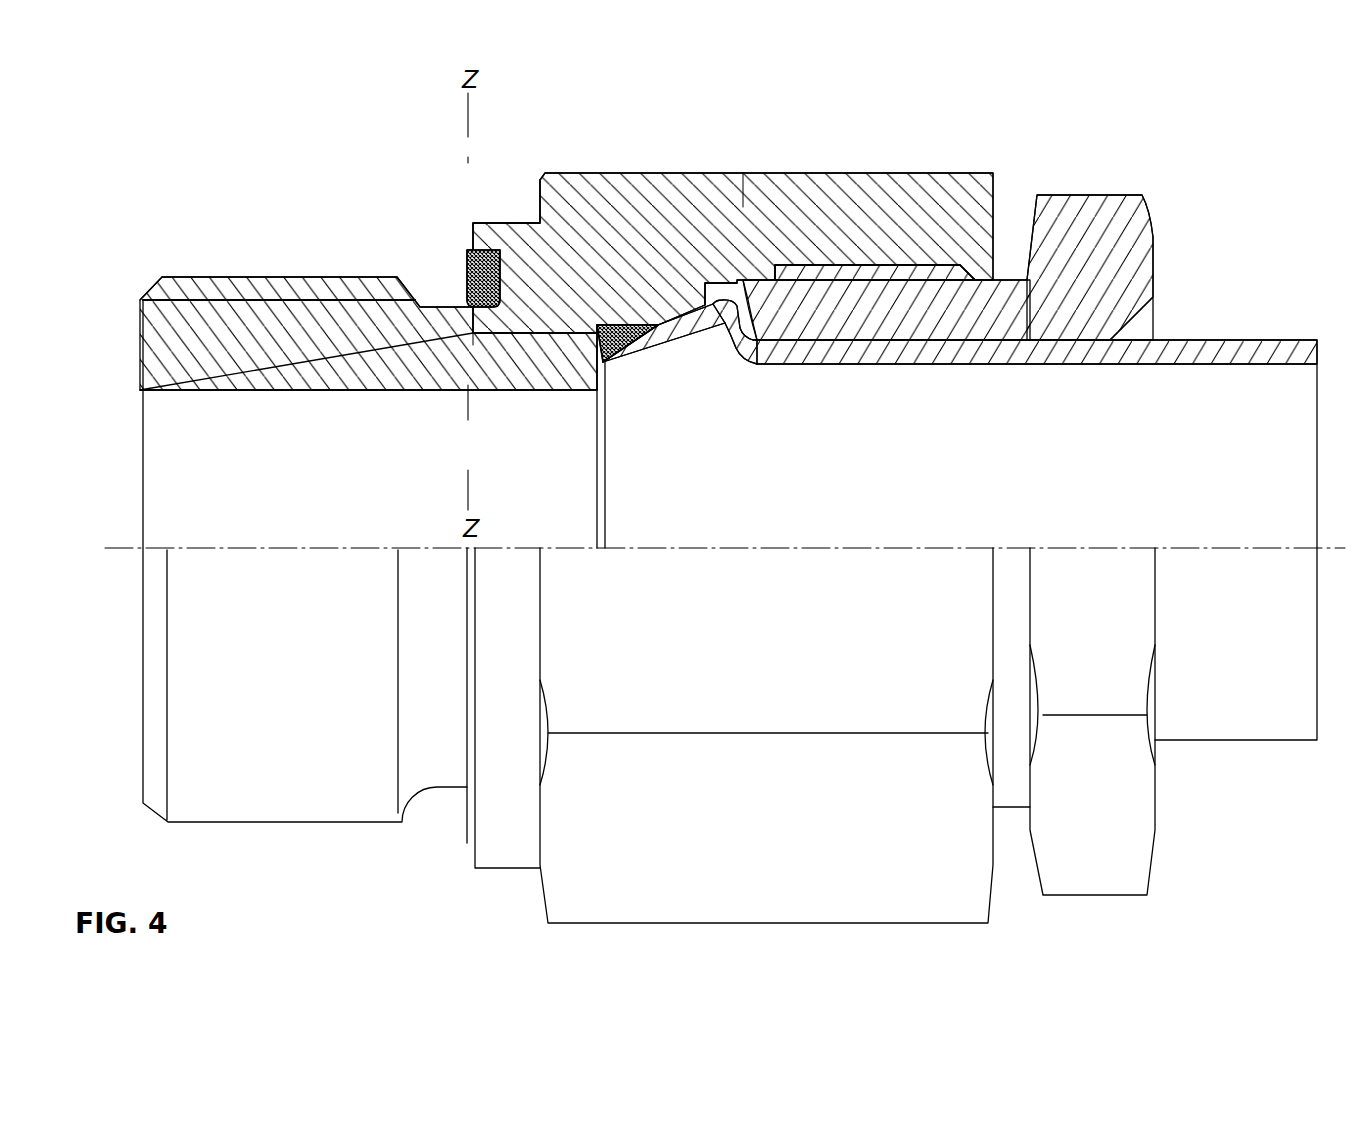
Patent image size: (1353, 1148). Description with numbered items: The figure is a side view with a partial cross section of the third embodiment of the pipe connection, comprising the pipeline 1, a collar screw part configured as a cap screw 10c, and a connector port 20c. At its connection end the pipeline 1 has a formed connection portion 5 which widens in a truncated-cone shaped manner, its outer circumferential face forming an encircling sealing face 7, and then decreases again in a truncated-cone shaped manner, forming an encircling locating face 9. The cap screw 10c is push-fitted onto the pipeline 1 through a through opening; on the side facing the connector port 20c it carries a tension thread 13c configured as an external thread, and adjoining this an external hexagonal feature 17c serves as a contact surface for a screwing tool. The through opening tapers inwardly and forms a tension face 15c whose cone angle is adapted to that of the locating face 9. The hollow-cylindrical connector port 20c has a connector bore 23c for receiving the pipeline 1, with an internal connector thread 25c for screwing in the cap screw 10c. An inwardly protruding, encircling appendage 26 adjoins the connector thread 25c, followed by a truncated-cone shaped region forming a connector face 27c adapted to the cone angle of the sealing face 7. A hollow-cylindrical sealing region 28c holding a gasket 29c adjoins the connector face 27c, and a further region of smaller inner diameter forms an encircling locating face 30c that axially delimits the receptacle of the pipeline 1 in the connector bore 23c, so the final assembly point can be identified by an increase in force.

The pipeline 1 is at (1234, 292).
The connection portion 5 is at (677, 348).
The sealing face 7 is at (690, 312).
The locating face 9 is at (770, 272).
The cap screw 10c is at (1091, 179).
The tension thread 13c is at (900, 278).
The tension face 15c is at (760, 298).
The external hexagonal feature 17c is at (1143, 820).
The connector port 20c is at (280, 236).
The connector bore 23c is at (586, 437).
The connector thread 25c is at (843, 268).
The appendage 26 is at (697, 306).
The connector face 27c is at (655, 312).
The sealing region 28c is at (498, 222).
The gasket 29c is at (457, 303).
The locating face 30c is at (597, 372).